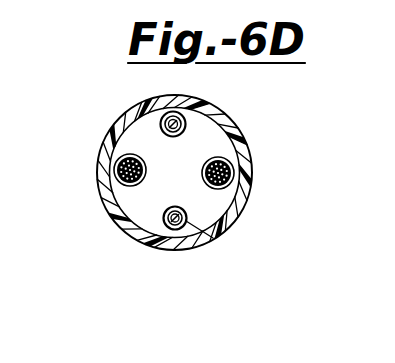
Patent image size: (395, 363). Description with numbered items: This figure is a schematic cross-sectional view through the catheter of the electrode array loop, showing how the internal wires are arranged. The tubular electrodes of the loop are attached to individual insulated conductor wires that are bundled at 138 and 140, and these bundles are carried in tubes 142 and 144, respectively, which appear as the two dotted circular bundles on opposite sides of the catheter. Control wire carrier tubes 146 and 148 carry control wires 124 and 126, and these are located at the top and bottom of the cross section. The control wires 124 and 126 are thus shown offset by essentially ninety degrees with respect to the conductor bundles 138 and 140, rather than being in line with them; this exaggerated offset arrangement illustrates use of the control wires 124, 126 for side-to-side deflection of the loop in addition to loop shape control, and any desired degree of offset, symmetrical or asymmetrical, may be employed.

The control wire 124 is at (204, 231).
The control wire 126 is at (163, 113).
The conductor wire bundle 138 is at (128, 154).
The conductor wire bundle 140 is at (228, 158).
The tube 142 is at (120, 192).
The tube 144 is at (224, 187).
The control wire carrier tube 146 is at (165, 226).
The control wire carrier tube 148 is at (184, 113).